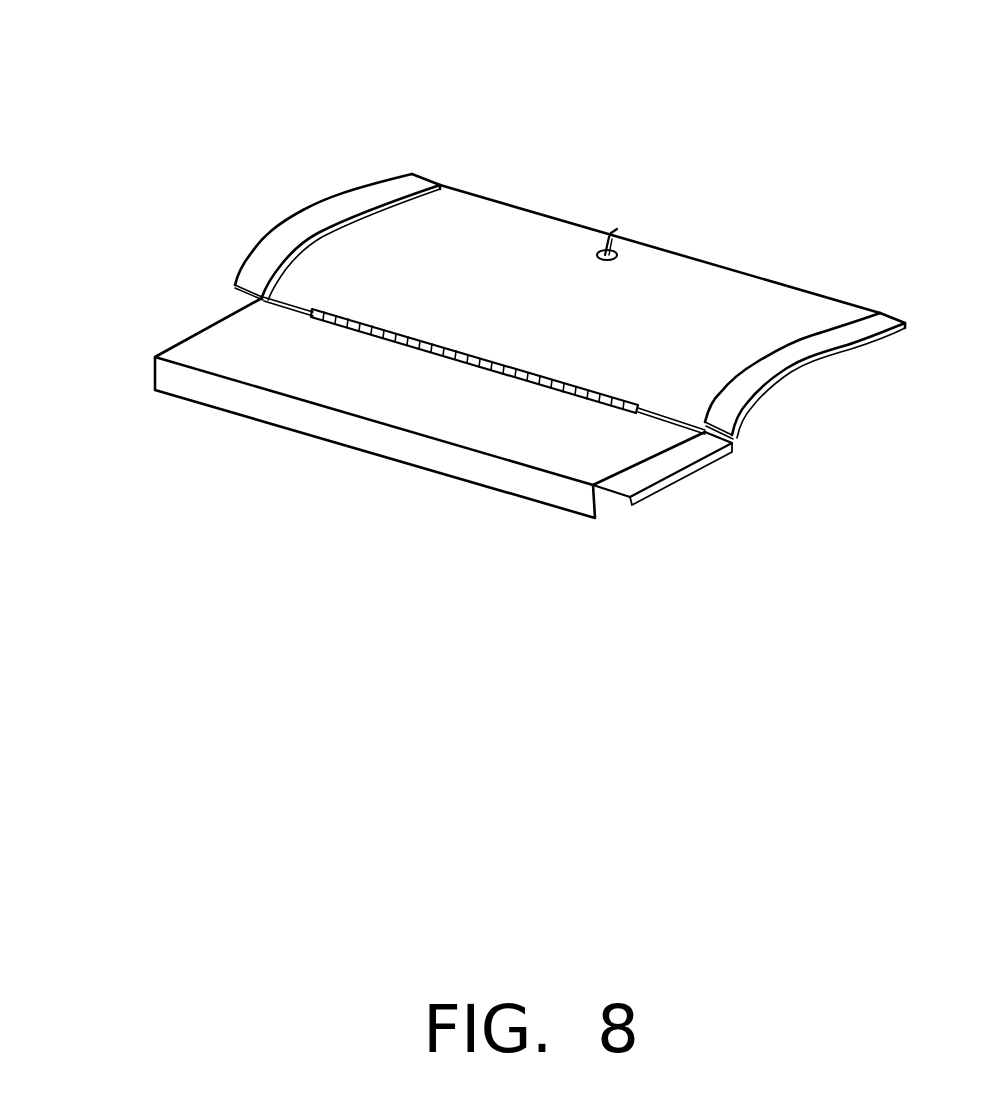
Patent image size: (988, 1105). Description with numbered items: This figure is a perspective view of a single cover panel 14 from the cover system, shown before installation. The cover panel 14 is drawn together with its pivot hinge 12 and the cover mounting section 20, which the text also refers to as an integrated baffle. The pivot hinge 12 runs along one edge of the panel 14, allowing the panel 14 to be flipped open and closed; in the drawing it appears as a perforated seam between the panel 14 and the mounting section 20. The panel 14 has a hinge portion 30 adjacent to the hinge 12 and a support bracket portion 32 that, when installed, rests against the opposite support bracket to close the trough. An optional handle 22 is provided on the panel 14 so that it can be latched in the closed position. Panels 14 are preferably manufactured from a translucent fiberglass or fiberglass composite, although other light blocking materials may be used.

The cover panel 14 is at (463, 291).
The pivot hinge 12 is at (490, 370).
The cover mounting section 20 is at (290, 378).
The handle 22 is at (610, 235).
The hinge portion 30 is at (708, 352).
The support bracket portion 32 is at (718, 288).